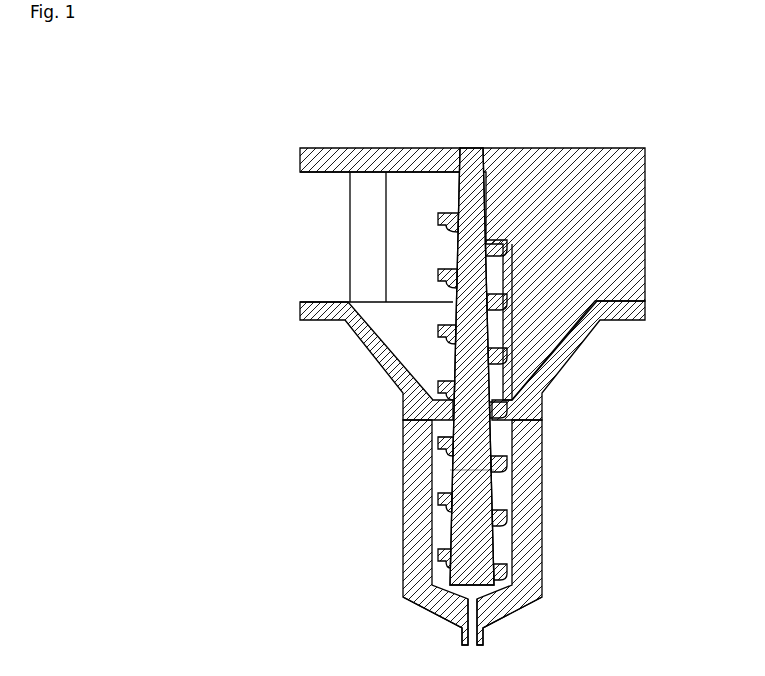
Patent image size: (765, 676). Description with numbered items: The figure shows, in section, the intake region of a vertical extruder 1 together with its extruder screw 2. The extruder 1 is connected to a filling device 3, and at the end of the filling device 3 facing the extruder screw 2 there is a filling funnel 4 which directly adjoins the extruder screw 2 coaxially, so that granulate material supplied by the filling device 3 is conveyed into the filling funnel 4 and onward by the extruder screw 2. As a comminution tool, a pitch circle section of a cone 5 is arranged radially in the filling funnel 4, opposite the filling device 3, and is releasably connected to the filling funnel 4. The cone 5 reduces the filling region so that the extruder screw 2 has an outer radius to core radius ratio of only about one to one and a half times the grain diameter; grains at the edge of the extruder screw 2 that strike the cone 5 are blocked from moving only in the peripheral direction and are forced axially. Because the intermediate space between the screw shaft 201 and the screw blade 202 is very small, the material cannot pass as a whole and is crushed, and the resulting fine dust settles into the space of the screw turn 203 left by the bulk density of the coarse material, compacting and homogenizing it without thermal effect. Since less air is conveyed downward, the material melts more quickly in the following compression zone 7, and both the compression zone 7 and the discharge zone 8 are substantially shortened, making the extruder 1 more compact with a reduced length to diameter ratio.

The vertical extruder 1 is at (185, 302).
The extruder screw 2 is at (351, 323).
The filling device 3 is at (328, 261).
The filling funnel 4 is at (410, 346).
The cone 5 is at (545, 267).
The compression zone 7 is at (622, 400).
The discharge zone 8 is at (622, 593).
The screw shaft 201 is at (478, 256).
The screw blade 202 is at (438, 442).
The screw turn 203 is at (443, 470).